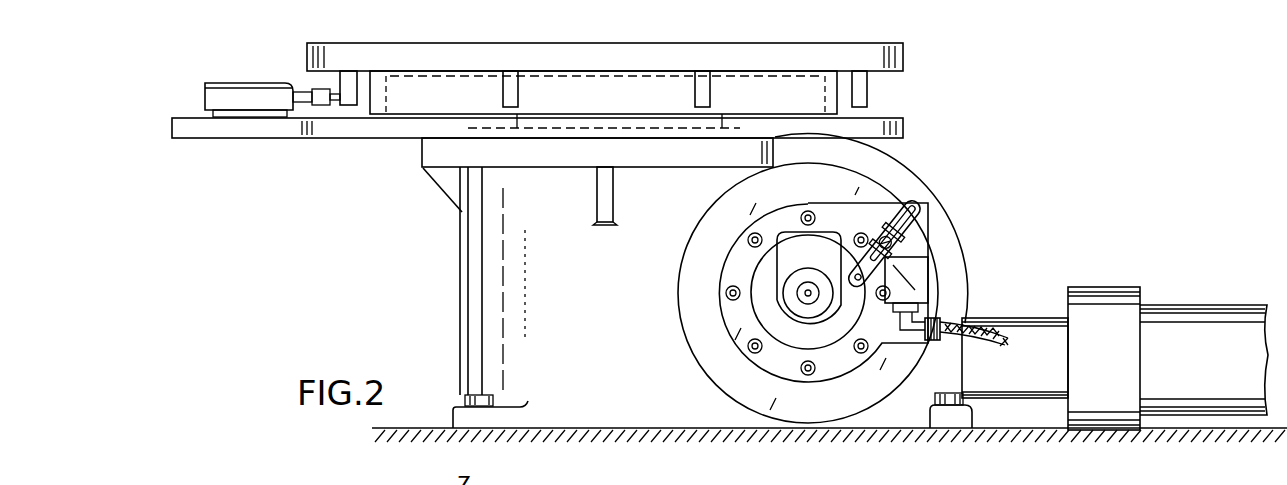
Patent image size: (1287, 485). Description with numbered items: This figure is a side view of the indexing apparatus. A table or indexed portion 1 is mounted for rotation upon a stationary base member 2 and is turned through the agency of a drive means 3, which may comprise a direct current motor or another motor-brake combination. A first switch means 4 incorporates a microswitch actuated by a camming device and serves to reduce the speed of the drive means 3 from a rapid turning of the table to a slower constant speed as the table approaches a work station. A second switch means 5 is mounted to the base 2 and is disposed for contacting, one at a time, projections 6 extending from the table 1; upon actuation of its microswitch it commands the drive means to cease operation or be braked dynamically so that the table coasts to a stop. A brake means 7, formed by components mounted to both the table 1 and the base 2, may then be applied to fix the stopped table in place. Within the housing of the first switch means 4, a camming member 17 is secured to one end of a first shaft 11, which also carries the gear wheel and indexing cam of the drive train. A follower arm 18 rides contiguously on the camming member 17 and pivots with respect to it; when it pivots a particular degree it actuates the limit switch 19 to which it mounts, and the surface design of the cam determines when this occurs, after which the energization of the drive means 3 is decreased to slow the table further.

The table 1 is at (905, 58).
The stationary base member 2 is at (420, 158).
The drive means 3 is at (1175, 303).
The first switch means 4 is at (938, 181).
The second switch means 5 is at (205, 95).
The projections 6 is at (350, 107).
The brake means 7 is at (416, 85).
The first shaft 11 is at (803, 297).
The camming member 17 is at (778, 263).
The follower arm 18 is at (927, 254).
The limit switch 19 is at (940, 285).